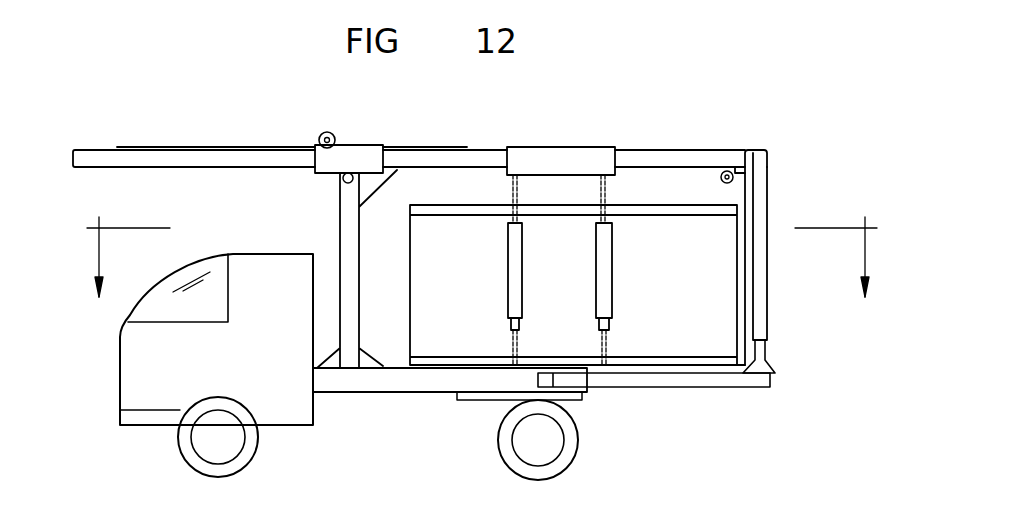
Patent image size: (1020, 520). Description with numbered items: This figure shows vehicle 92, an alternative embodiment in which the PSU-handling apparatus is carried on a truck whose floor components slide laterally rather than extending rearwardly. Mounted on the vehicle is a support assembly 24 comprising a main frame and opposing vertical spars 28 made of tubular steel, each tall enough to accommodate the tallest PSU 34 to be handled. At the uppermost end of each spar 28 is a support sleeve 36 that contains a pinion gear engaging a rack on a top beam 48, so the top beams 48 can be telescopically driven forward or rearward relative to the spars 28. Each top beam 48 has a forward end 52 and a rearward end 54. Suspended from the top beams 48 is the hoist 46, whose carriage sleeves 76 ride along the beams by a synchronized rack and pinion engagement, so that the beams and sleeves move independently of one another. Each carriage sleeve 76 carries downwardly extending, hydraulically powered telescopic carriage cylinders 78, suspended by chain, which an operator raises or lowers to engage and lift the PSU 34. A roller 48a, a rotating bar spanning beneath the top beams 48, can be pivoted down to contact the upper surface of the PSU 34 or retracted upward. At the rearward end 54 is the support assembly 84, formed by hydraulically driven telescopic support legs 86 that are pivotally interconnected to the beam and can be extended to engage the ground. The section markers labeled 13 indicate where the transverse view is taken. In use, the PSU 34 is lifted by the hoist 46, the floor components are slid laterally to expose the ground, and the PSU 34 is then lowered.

The section line 13- 13 is at (482, 239).
The support assembly 24 is at (326, 188).
The vertical spars 28 is at (343, 237).
The PSU 34 is at (707, 264).
The support sleeve 36 is at (347, 149).
The hoist 46 is at (612, 150).
The top beams 48 is at (477, 158).
The roller 48a is at (725, 170).
The forward end 52 is at (92, 158).
The rearward end 54 is at (768, 167).
The carriage sleeves 76 is at (547, 147).
The carriage cylinders 78 is at (508, 308).
The support assembly 84 is at (820, 292).
The telescopic support legs 86 is at (768, 327).
The vehicle 92 is at (680, 134).